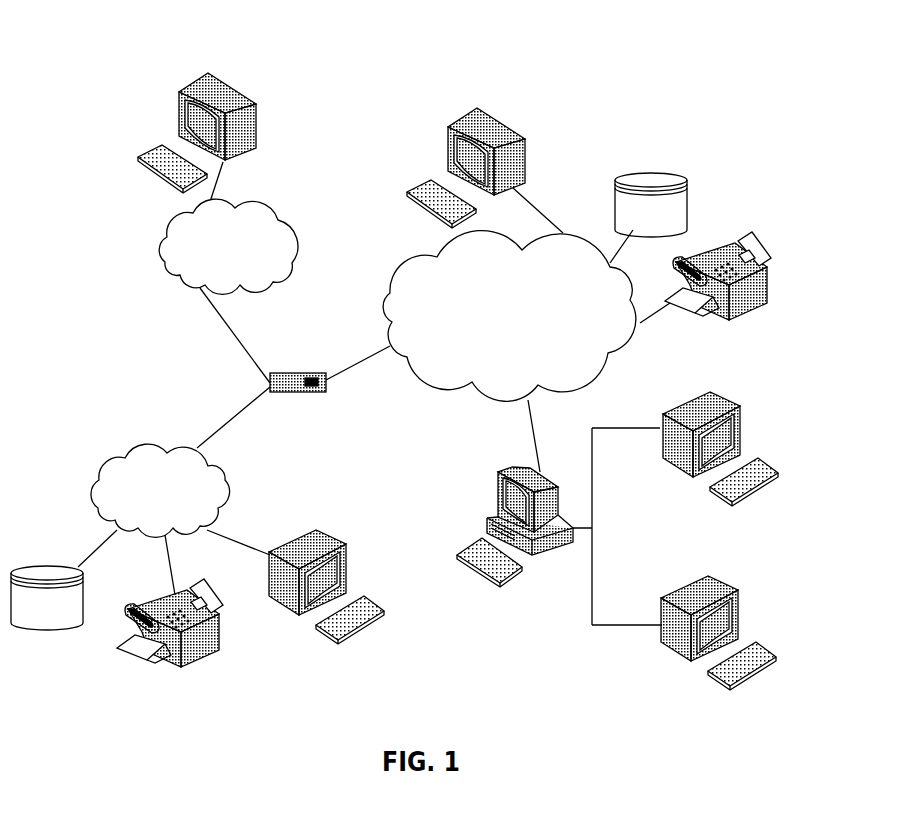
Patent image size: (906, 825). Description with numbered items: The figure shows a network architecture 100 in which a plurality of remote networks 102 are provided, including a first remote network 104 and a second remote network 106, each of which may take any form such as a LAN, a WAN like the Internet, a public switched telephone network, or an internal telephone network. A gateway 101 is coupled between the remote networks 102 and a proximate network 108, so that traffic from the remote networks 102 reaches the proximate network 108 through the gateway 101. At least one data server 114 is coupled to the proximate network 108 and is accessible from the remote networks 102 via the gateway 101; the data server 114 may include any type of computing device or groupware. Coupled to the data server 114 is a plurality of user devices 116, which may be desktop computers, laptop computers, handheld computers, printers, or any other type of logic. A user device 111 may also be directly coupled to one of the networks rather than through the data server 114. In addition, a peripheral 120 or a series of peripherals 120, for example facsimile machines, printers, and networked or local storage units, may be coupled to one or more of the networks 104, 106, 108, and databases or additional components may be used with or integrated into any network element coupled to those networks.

The architecture 100 is at (124, 61).
The gateway 101 is at (283, 372).
The remote networks 102 is at (147, 300).
The first remote network 104 is at (96, 470).
The second remote network 106 is at (290, 226).
The proximate network 108 is at (603, 375).
The user device 111 is at (522, 139).
The data server 114 is at (498, 486).
The user devices 116 is at (257, 106).
The peripheral 120 is at (688, 182).